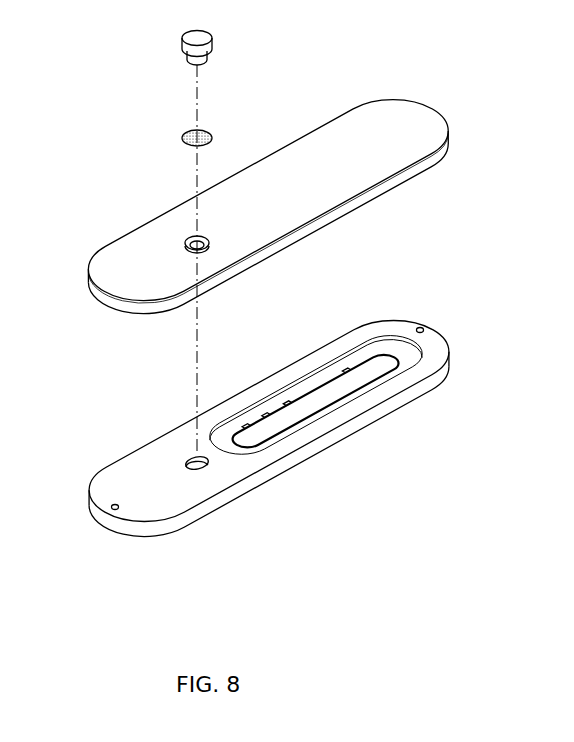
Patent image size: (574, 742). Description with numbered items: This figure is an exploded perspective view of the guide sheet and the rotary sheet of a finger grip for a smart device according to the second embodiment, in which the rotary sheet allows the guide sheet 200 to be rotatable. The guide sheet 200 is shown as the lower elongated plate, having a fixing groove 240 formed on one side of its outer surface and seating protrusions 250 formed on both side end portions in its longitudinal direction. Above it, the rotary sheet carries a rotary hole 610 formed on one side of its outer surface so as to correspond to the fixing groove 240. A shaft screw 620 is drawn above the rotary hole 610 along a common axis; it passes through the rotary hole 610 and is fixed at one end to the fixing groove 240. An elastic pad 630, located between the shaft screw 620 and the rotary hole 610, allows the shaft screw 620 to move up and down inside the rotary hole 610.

The guide sheet 200 is at (302, 437).
The fixing groove 240 is at (200, 470).
The seating protrusions 250 is at (421, 327).
The rotary hole 610 is at (192, 236).
The shaft screw 620 is at (186, 53).
The elastic pad 630 is at (182, 138).